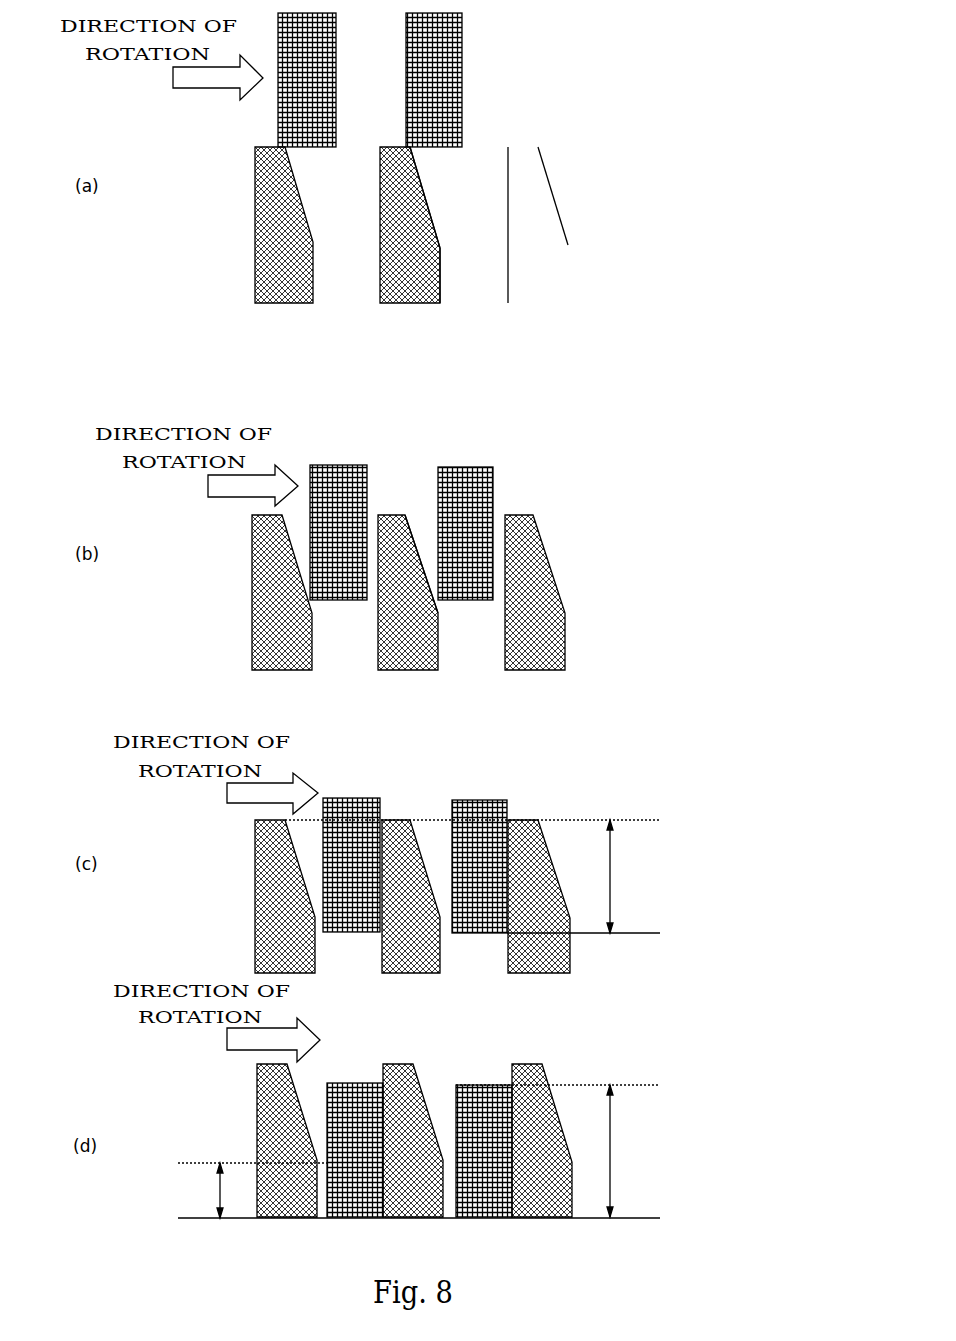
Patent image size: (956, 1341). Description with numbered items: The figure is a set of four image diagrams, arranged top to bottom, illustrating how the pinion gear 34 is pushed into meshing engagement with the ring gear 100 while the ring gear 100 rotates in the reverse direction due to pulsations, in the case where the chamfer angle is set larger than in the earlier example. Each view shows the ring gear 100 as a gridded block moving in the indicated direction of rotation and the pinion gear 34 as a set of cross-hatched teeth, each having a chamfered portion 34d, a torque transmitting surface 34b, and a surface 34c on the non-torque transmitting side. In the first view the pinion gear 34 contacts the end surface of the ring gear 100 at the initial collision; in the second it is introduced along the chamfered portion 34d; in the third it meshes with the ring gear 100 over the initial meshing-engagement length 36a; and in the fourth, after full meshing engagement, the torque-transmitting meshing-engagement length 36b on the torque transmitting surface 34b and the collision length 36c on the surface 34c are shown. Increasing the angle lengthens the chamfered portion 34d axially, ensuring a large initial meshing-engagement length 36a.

The pinion gear 34 is at (395, 285).
The torque transmitting surface 34b is at (507, 297).
The surface on the non-torque transmitting side 34c is at (440, 297).
The chamfered portion 34d is at (425, 197).
The initial meshing-engagement length 36a is at (631, 876).
The torque-transmitting meshing-engagement length 36b is at (631, 1151).
The non-torque transmitting surface collision length 36c is at (199, 1190).
The ring gear 100 is at (463, 68).